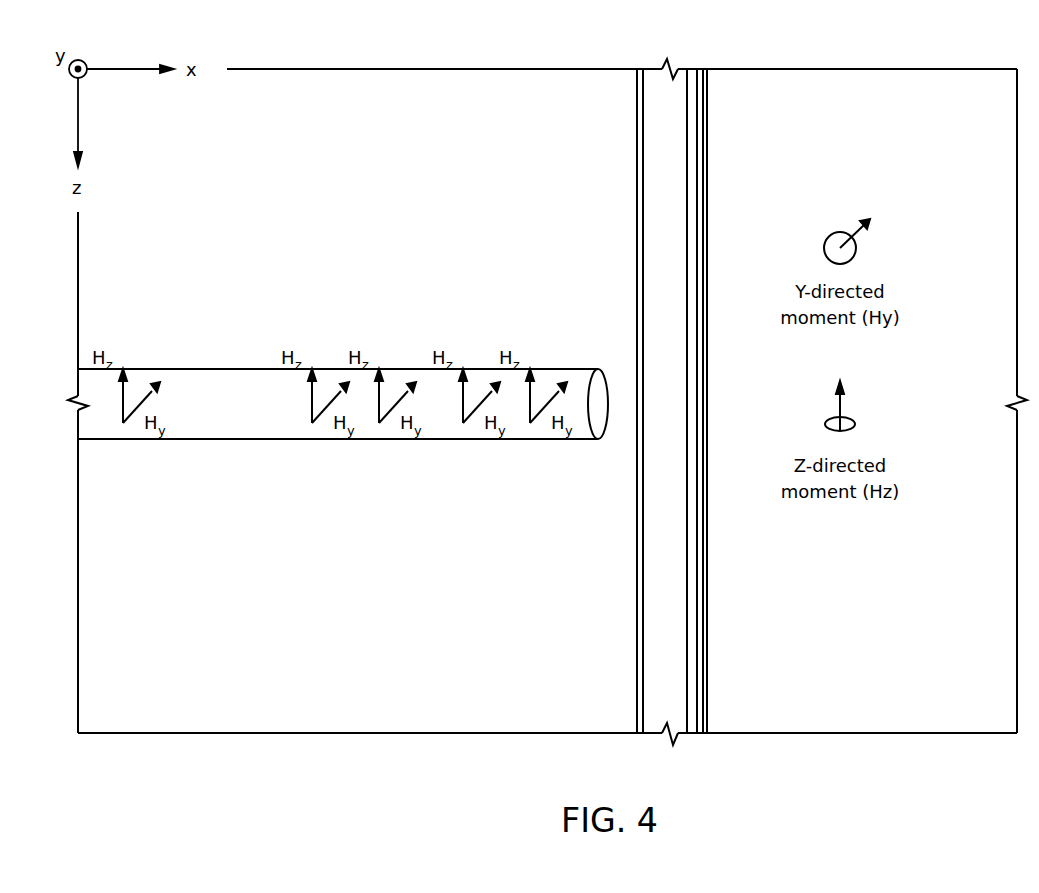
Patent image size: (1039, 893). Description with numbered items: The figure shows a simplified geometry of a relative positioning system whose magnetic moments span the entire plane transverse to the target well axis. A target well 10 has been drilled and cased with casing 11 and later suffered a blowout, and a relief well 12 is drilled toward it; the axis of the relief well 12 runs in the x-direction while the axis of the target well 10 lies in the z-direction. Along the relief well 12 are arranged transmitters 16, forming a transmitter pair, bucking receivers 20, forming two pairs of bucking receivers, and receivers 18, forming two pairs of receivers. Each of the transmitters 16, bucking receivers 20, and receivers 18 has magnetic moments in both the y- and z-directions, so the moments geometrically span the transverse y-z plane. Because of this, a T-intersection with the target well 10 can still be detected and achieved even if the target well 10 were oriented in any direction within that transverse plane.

The well 10 is at (702, 52).
The casing 11 is at (636, 127).
The relief well 12 is at (215, 368).
The transmitters 16 is at (112, 496).
The receivers 18 is at (582, 308).
The bucking receivers 20 is at (298, 496).